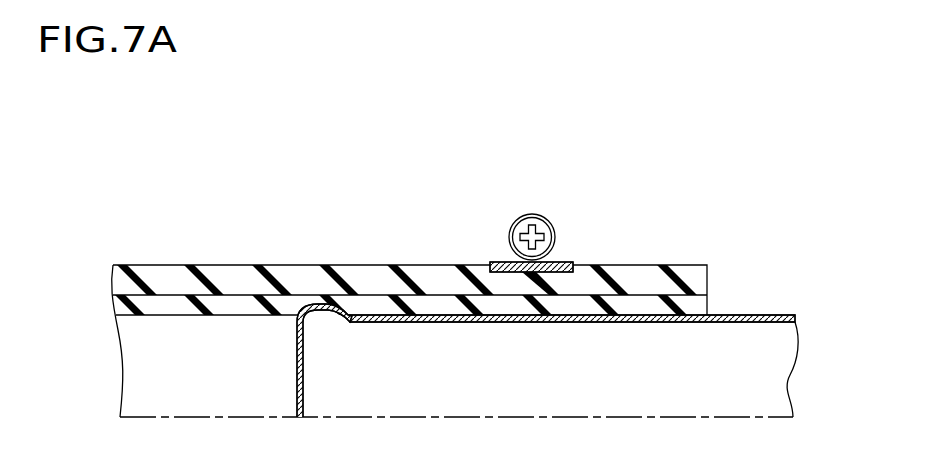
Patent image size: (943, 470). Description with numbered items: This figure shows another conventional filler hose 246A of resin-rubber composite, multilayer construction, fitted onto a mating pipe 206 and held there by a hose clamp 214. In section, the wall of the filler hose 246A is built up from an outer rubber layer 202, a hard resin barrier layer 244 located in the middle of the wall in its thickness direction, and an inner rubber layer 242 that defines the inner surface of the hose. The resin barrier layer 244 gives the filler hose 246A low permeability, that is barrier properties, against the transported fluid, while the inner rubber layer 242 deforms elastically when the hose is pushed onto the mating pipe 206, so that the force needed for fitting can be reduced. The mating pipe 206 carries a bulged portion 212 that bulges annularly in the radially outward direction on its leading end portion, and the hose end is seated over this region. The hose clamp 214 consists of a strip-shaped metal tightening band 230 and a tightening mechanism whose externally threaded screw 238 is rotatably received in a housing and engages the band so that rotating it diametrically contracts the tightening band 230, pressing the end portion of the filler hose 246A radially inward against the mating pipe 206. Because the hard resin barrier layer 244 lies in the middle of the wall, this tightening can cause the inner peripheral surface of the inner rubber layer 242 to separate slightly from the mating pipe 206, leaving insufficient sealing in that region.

The outer rubber layer 202 is at (647, 275).
The mating pipe 206 is at (750, 316).
The bulged portion 212 is at (308, 302).
The hose clamp 214 is at (530, 198).
The tightening band 230 is at (496, 262).
The externally threaded screw 238 is at (541, 229).
The inner rubber layer 242 is at (655, 305).
The resin barrier layer 244 is at (578, 293).
The filler hose 246A is at (260, 201).